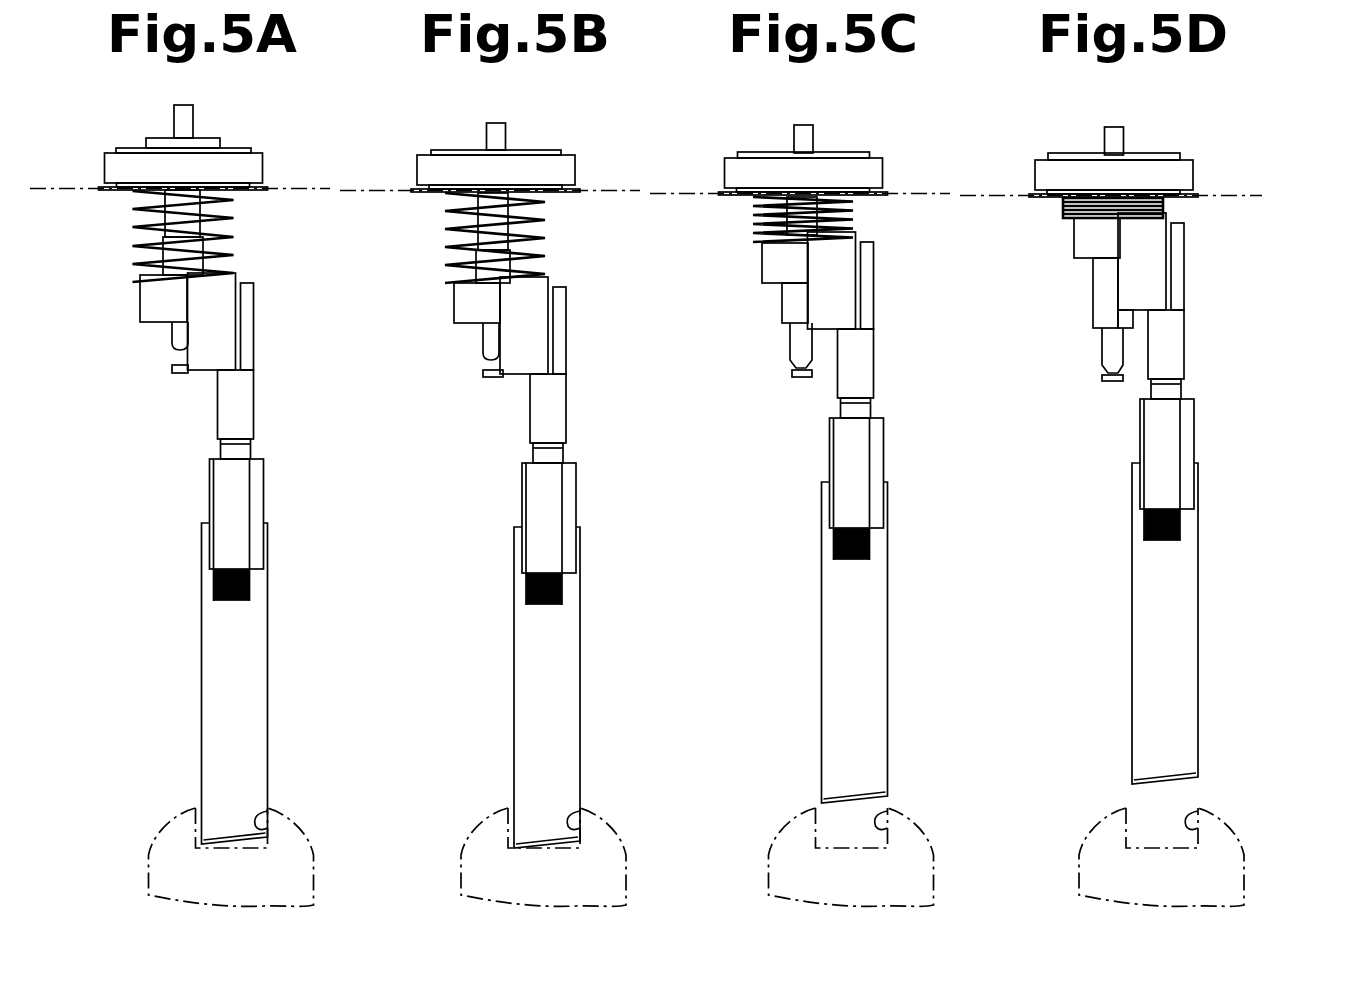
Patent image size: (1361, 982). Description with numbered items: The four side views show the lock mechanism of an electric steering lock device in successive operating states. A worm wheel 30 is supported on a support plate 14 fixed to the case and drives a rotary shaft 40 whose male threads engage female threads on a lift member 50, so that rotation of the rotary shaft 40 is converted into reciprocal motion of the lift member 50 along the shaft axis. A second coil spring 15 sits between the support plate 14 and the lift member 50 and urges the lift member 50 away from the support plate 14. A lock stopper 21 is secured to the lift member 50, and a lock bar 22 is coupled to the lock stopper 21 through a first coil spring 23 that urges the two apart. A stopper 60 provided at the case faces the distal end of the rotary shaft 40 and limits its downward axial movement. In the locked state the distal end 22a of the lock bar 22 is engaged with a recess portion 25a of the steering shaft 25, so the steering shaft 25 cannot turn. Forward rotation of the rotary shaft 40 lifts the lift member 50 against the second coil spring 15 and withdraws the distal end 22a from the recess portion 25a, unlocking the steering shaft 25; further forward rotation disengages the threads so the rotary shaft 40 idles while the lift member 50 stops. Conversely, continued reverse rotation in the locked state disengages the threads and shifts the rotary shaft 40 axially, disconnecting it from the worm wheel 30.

In FIG. 5A, the support plate 14 is at (100, 192).
In FIG. 5B, the support plate 14 is at (414, 193).
In FIG. 5C, the support plate 14 is at (722, 196).
In FIG. 5D, the support plate 14 is at (1032, 198).
In FIG. 5B, the second coil spring 15 is at (545, 225).
In FIG. 5C, the second coil spring 15 is at (853, 210).
In FIG. 5D, the second coil spring 15 is at (1165, 205).
In FIG. 5A, the lock stopper 21 is at (252, 340).
In FIG. 5B, the lock stopper 21 is at (566, 342).
In FIG. 5C, the lock stopper 21 is at (876, 297).
In FIG. 5D, the lock stopper 21 is at (1186, 275).
In FIG. 5A, the lock bar 22 is at (256, 721).
In FIG. 5B, the lock bar 22 is at (566, 721).
In FIG. 5C, the lock bar 22 is at (876, 682).
In FIG. 5D, the lock bar 22 is at (1188, 662).
In FIG. 5A, the distal end of the lock bar 22a is at (230, 845).
In FIG. 5B, the distal end of the lock bar 22a is at (543, 845).
In FIG. 5C, the distal end of the lock bar 22a is at (850, 804).
In FIG. 5D, the distal end of the lock bar 22a is at (1157, 785).
In FIG. 5A, the first coil spring 23 is at (214, 581).
In FIG. 5B, the first coil spring 23 is at (528, 581).
In FIG. 5C, the first coil spring 23 is at (836, 541).
In FIG. 5D, the first coil spring 23 is at (1147, 519).
In FIG. 5A, the steering shaft 25 is at (315, 852).
In FIG. 5B, the steering shaft 25 is at (628, 852).
In FIG. 5C, the steering shaft 25 is at (937, 855).
In FIG. 5D, the steering shaft 25 is at (1250, 857).
In FIG. 5A, the recess portion 25a is at (268, 812).
In FIG. 5B, the recess portion 25a is at (580, 812).
In FIG. 5C, the recess portion 25a is at (888, 812).
In FIG. 5D, the recess portion 25a is at (1198, 812).
In FIG. 5A, the worm wheel 30 is at (94, 171).
In FIG. 5B, the worm wheel 30 is at (407, 172).
In FIG. 5C, the worm wheel 30 is at (717, 174).
In FIG. 5D, the worm wheel 30 is at (1027, 177).
In FIG. 5A, the rotary shaft 40 is at (207, 125).
In FIG. 5B, the rotary shaft 40 is at (519, 126).
In FIG. 5C, the rotary shaft 40 is at (826, 128).
In FIG. 5D, the rotary shaft 40 is at (1136, 131).
In FIG. 5A, the lift member 50 is at (145, 300).
In FIG. 5B, the lift member 50 is at (460, 302).
In FIG. 5C, the lift member 50 is at (768, 259).
In FIG. 5D, the lift member 50 is at (1078, 240).
In FIG. 5A, the stopper 60 is at (172, 368).
In FIG. 5B, the stopper 60 is at (488, 378).
In FIG. 5C, the stopper 60 is at (798, 379).
In FIG. 5D, the stopper 60 is at (1106, 382).